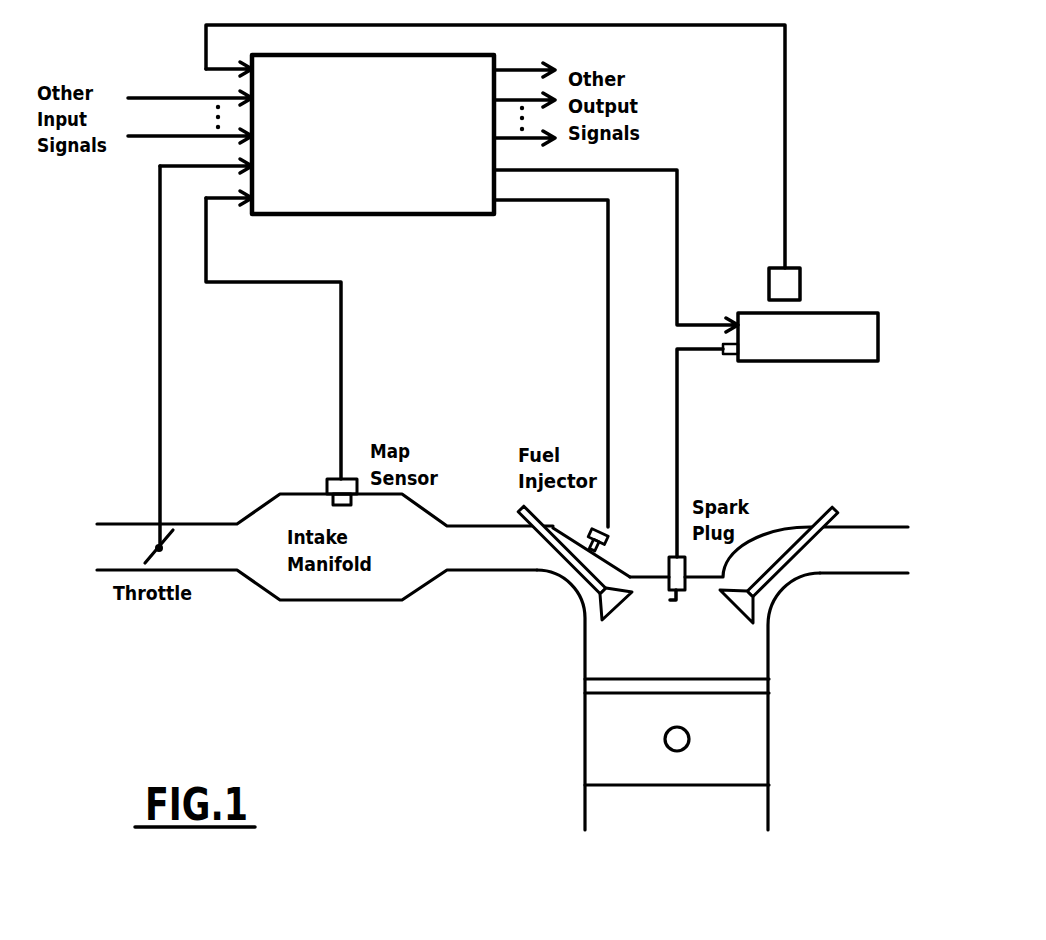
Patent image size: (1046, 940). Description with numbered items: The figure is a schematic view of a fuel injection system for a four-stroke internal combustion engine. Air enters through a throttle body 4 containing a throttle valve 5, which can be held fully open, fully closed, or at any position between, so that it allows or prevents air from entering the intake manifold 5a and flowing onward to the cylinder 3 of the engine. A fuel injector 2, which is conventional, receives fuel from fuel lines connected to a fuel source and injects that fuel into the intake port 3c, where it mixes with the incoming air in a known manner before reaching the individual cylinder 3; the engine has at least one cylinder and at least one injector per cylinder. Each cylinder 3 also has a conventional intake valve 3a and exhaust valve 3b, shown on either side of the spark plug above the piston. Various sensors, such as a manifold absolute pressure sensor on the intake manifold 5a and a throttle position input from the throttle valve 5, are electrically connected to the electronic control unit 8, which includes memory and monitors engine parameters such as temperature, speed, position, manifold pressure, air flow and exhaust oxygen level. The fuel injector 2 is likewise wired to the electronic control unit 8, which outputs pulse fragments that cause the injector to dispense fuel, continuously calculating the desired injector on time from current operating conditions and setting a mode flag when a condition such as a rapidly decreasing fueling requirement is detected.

The fuel injector 2 is at (607, 540).
The cylinder 3 is at (768, 731).
The intake valve 3a is at (580, 572).
The exhaust valve 3b is at (811, 523).
The intake port 3c is at (618, 580).
The throttle body 4 is at (206, 522).
The throttle valve 5 is at (157, 548).
The intake manifold 5a is at (333, 597).
The electronic control unit (ECU) 8 is at (437, 199).